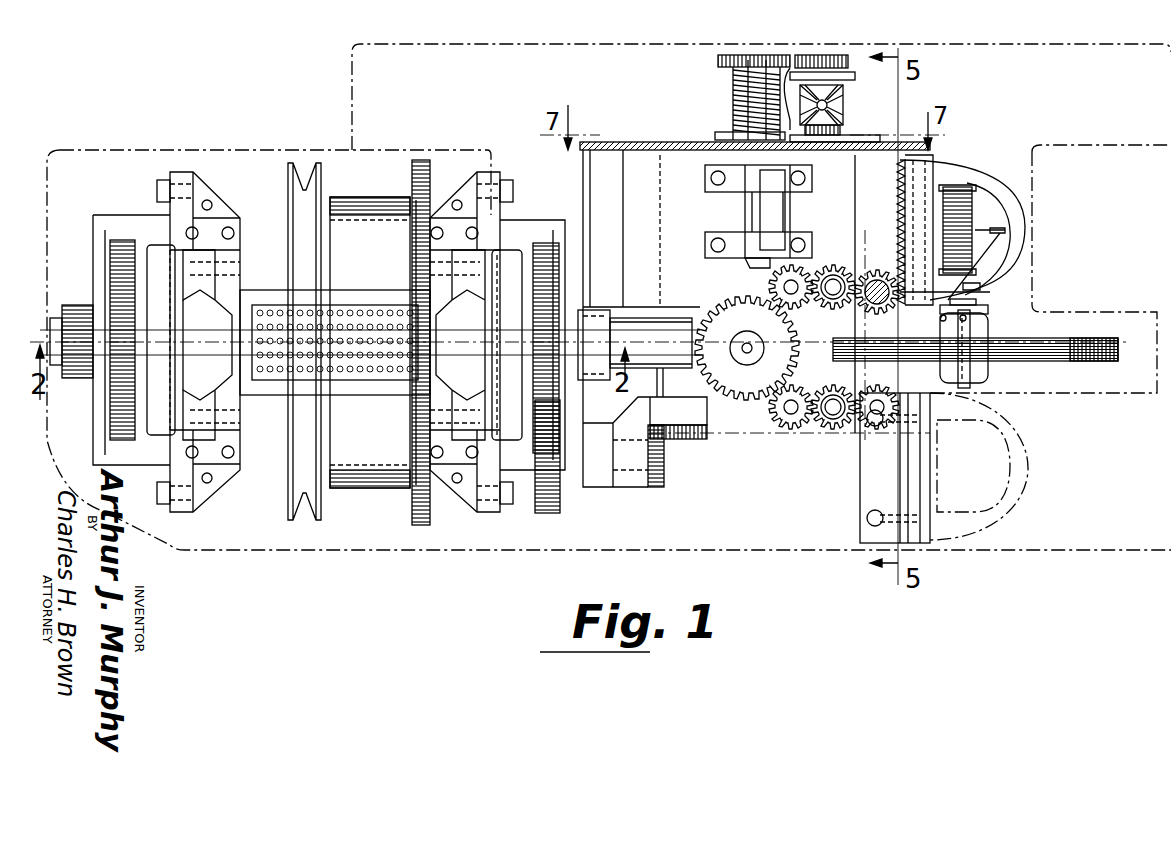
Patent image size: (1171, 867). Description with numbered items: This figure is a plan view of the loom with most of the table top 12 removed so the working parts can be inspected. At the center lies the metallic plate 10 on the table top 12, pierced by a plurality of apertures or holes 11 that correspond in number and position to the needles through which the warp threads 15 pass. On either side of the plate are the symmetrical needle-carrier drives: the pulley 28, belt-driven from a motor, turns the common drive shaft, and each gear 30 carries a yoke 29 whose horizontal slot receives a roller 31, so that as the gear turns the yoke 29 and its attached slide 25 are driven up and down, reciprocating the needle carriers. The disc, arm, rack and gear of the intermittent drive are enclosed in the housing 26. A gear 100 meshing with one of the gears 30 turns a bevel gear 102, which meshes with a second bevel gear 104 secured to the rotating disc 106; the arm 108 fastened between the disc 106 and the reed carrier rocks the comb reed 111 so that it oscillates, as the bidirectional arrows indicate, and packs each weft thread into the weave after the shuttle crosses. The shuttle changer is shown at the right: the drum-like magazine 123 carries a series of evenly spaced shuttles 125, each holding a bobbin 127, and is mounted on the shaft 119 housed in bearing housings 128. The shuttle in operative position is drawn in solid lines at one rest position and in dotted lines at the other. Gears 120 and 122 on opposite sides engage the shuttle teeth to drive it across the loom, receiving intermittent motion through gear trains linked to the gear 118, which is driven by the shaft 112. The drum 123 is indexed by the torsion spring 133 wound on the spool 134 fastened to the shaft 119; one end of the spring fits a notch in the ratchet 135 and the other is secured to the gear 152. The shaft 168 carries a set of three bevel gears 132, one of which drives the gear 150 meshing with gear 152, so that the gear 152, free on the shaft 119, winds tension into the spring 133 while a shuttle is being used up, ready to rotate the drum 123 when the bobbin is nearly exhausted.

The metallic plate 10 is at (272, 388).
The apertures or holes 11 is at (392, 318).
The table top 12 is at (1048, 545).
The warp threads 15 is at (1012, 344).
The slides 25 is at (195, 380).
The housing 26 is at (378, 200).
The pulley 28 is at (318, 510).
The yokes 29 is at (150, 240).
The gear 30 is at (112, 270).
The rollers 31 is at (338, 342).
The gear 100 is at (553, 505).
The bevel gear 102 is at (660, 485).
The bevel gear 104 is at (688, 439).
The rotating disc 106 is at (640, 318).
The arm 108 is at (616, 312).
The comb reed 111 is at (955, 368).
The shaft 112 is at (748, 352).
The gear 118 is at (745, 302).
The shaft 119 is at (760, 212).
The gear 120 is at (878, 283).
The gear 122 is at (870, 425).
The drum-like magazine 123 is at (645, 142).
The shuttles 125 is at (990, 185).
The bobbin 127 is at (968, 277).
The bearing housings 128 is at (770, 192).
The bevel gears 132 is at (840, 114).
The torsion spring 133 is at (740, 102).
The spool 134 is at (735, 75).
The ratchet 135 is at (730, 138).
The gear 150 is at (832, 55).
The gear 152 is at (738, 55).
The shaft 168 is at (790, 60).